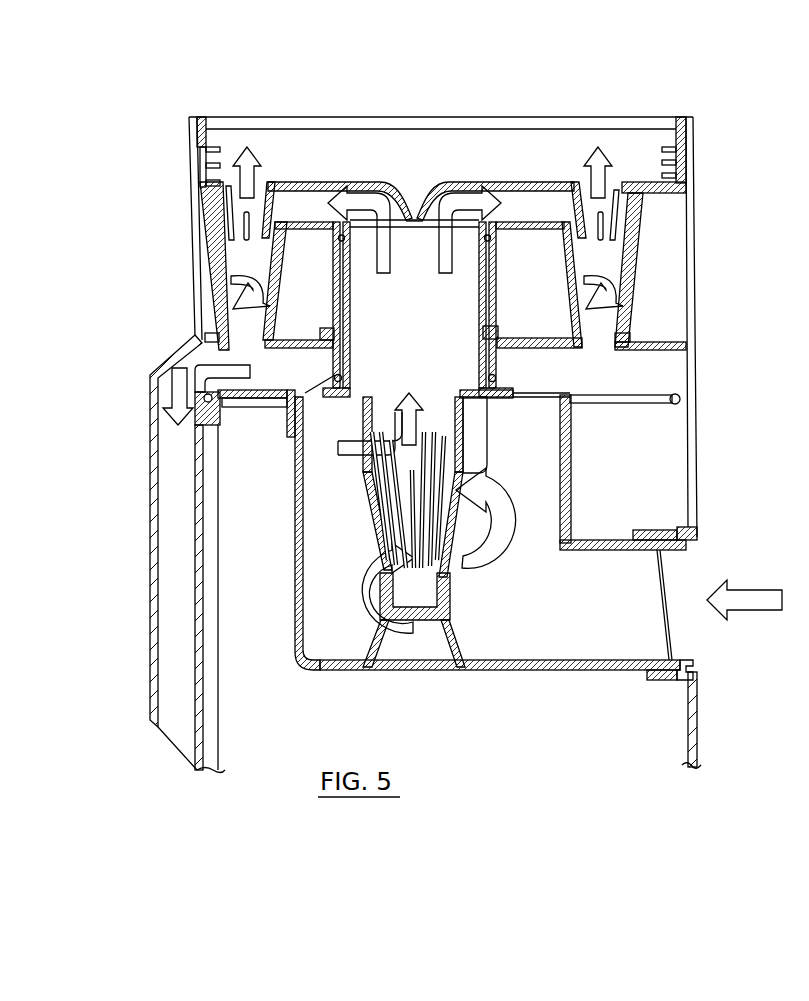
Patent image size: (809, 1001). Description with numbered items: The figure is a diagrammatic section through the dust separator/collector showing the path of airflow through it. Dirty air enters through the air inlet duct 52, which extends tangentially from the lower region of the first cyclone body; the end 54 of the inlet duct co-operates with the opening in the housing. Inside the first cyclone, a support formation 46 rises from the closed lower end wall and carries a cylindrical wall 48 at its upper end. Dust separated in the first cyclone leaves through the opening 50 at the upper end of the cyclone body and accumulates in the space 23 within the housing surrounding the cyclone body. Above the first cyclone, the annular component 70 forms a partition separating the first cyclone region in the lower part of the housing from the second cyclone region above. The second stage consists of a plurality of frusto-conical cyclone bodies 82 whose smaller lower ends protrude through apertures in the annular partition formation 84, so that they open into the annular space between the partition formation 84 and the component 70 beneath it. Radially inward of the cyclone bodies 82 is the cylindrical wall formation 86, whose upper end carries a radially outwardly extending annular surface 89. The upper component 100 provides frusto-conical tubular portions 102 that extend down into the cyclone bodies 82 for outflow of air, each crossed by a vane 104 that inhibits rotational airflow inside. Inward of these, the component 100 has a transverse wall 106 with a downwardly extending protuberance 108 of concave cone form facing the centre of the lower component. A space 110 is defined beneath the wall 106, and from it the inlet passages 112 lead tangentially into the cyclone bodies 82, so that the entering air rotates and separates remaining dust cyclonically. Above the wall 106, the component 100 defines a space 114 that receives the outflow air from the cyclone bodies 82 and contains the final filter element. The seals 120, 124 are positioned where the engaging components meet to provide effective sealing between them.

The component 100 is at (640, 140).
The frusto-conical tubular portions 102 is at (223, 213).
The vane 104 is at (243, 235).
The wall 106 is at (327, 180).
The protuberance 108 is at (407, 197).
The space 110 is at (520, 210).
The inlet passages 112 is at (284, 197).
The space 114 is at (400, 168).
The annular surface 89 is at (557, 197).
The cyclone bodies 82 is at (210, 282).
The annular partition formation 84 is at (657, 342).
The cylindrical wall formation 86 is at (500, 282).
The component 70 is at (622, 397).
The opening 50 is at (570, 437).
The seal 124 is at (498, 233).
The seal 120 is at (495, 378).
The cylindrical wall 48 is at (447, 612).
The support formation 46 is at (380, 655).
The air inlet duct 52 is at (597, 667).
The end of the inlet duct 54 is at (680, 662).
The space 23 is at (660, 741).